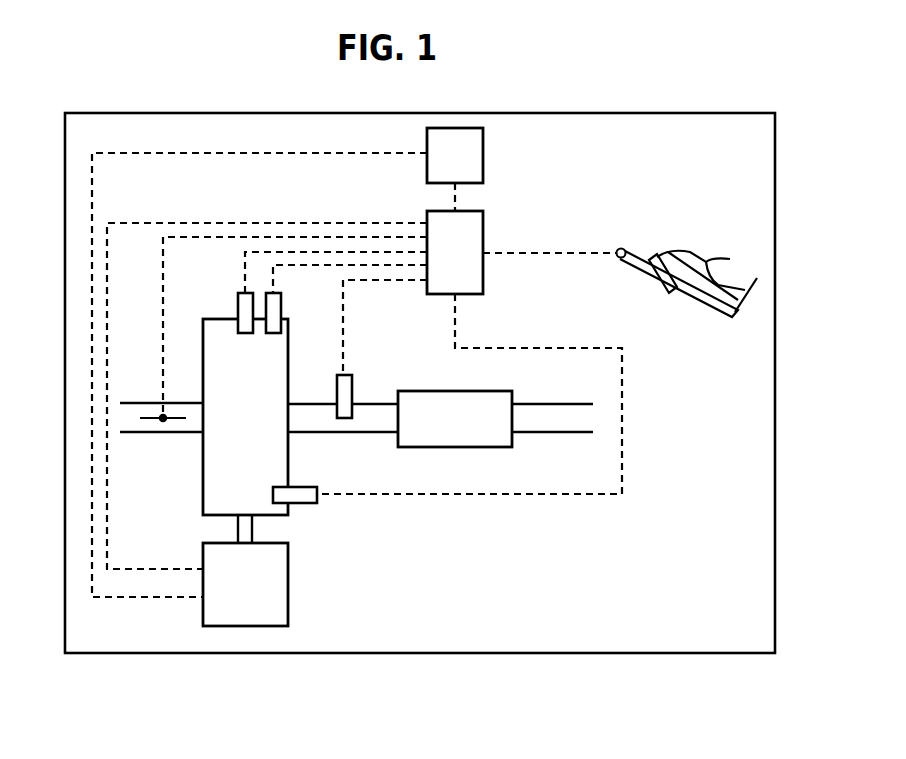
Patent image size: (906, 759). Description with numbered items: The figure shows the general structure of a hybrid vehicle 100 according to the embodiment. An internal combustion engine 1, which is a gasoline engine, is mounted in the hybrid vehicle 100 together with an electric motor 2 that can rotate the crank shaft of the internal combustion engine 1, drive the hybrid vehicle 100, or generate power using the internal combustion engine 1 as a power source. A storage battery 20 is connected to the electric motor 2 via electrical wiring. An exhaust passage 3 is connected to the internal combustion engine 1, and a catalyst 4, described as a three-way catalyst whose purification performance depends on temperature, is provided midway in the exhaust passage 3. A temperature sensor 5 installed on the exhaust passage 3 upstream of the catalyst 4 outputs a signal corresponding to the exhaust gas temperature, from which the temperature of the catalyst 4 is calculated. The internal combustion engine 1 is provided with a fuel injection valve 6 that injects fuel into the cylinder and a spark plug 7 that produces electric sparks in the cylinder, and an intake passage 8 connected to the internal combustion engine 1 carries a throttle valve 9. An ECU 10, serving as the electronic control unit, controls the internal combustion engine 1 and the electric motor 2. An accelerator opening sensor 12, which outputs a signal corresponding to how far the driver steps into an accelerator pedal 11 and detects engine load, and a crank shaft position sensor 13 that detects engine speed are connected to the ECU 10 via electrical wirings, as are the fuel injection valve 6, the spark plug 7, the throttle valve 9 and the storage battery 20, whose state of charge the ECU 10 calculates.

The internal combustion engine 1 is at (288, 458).
The electric motor 2 is at (288, 581).
The exhaust passage 3 is at (553, 433).
The catalyst 4 is at (418, 391).
The temperature sensor 5 is at (352, 380).
The fuel injection valve 6 is at (238, 304).
The spark plug 7 is at (281, 300).
The intake passage 8 is at (143, 402).
The throttle valve 9 is at (163, 432).
The ECU 10 is at (483, 238).
The accelerator pedal 11 is at (690, 298).
The accelerator opening sensor 12 is at (617, 258).
The crank shaft position sensor 13 is at (300, 503).
The storage battery 20 is at (483, 154).
The hybrid vehicle 100 is at (316, 653).